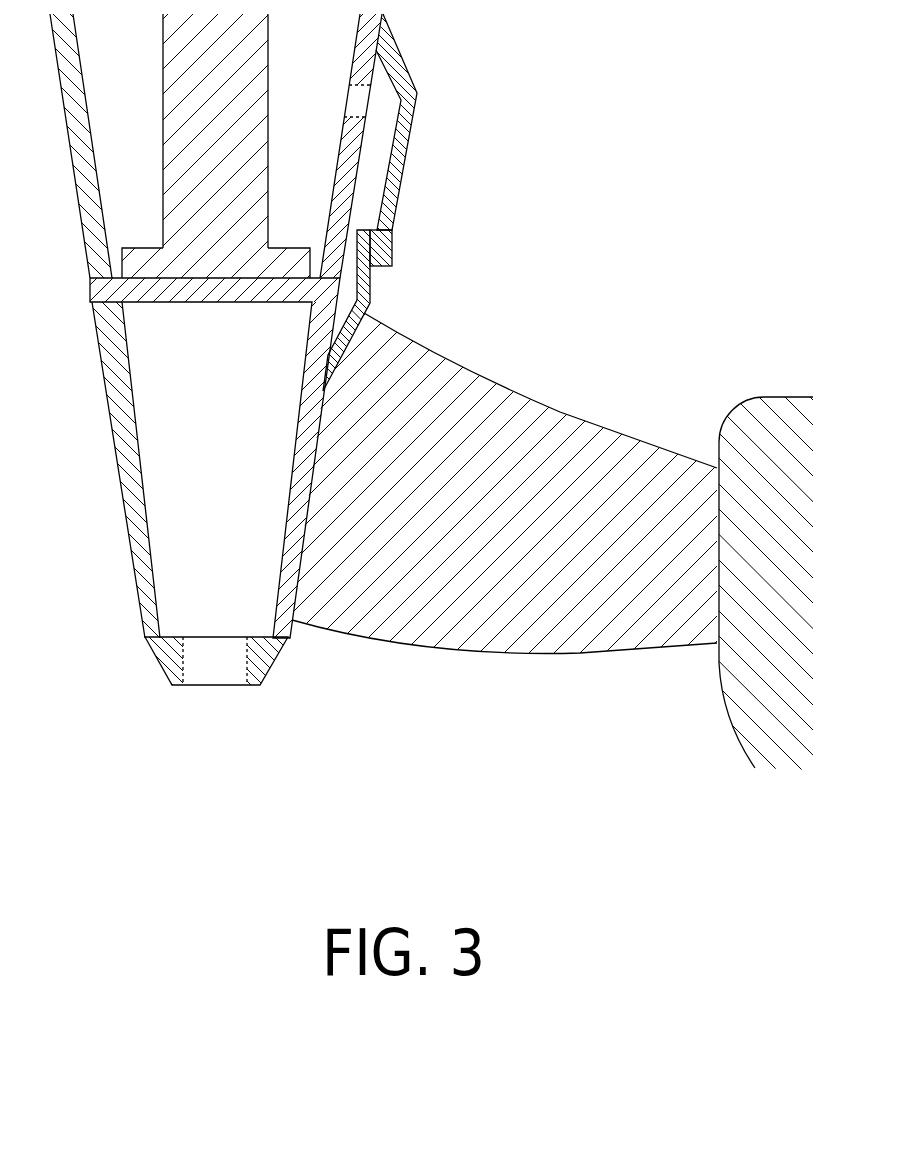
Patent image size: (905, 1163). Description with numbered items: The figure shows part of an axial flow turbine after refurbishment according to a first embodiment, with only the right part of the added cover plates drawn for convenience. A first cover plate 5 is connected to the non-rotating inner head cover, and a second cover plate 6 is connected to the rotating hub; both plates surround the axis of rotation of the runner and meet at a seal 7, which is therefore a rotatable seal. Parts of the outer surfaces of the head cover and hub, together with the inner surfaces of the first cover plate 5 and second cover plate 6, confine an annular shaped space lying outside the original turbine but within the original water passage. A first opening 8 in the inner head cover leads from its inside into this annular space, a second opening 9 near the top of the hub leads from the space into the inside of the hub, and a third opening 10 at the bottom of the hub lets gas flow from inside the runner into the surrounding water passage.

The first cover plate 5 is at (407, 147).
The second cover plate 6 is at (379, 326).
The seal 7 is at (414, 261).
The first opening 8 is at (384, 111).
The second opening 9 is at (279, 327).
The third opening 10 is at (226, 705).